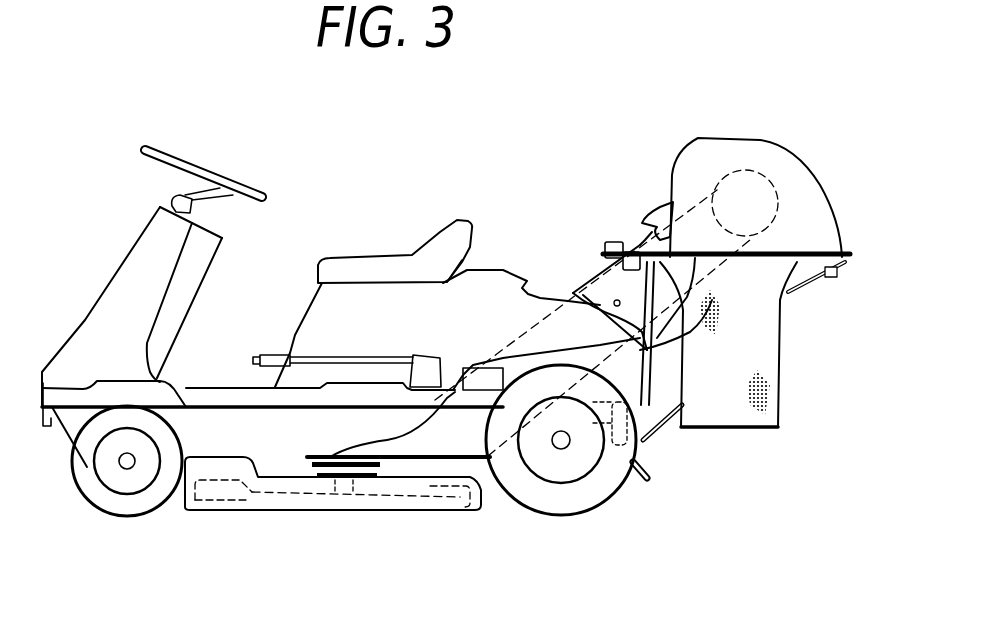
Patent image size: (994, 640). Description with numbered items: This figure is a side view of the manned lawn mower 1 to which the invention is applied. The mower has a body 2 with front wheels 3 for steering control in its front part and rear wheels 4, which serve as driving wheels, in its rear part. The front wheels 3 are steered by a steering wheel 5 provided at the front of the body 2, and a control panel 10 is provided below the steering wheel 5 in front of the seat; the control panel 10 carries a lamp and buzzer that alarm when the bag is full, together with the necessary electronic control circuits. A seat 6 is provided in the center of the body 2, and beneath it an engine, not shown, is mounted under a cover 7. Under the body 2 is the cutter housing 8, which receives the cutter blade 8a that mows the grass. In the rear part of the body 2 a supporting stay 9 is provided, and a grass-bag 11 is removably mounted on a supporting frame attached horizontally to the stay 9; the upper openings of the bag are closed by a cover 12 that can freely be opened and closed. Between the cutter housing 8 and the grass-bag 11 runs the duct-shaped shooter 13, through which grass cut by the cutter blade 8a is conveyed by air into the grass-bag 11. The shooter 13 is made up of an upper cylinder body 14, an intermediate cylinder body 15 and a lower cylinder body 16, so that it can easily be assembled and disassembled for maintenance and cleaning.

The riding lawn mower 1 is at (462, 205).
The body 2 is at (211, 384).
The front wheels 3 is at (97, 508).
The rear wheels 4 is at (603, 494).
The steering wheel 5 is at (197, 162).
The seat 6 is at (382, 260).
The cover 7 is at (320, 303).
The cutter housing 8 is at (288, 512).
The cutter blade 8a is at (207, 497).
The supporting stay 9 is at (655, 343).
The control panel 10 is at (205, 218).
The grass-bag 11 is at (783, 357).
The cover 12 is at (814, 160).
The shooter 13 is at (587, 266).
The upper cylinder body 14 is at (647, 220).
The intermediate cylinder body 15 is at (573, 297).
The lower cylinder body 16 is at (393, 440).